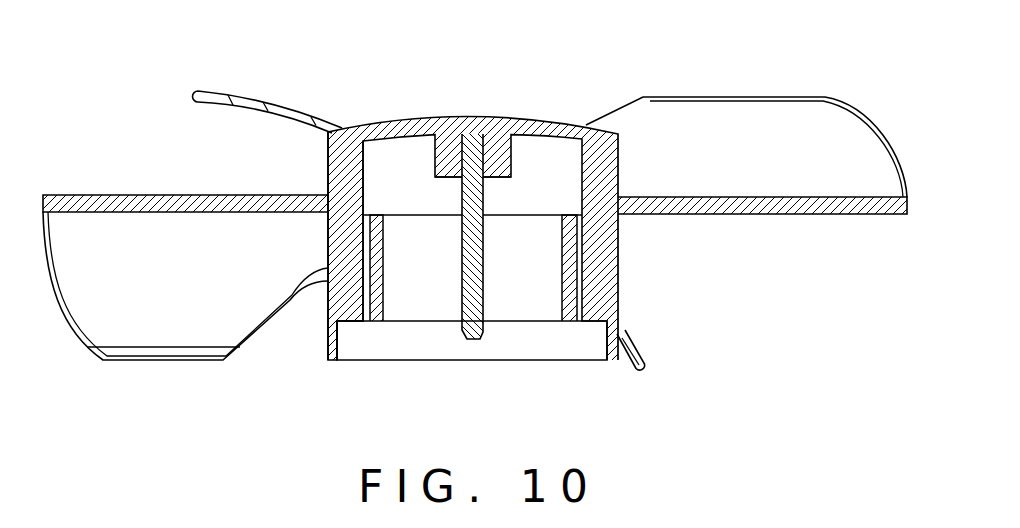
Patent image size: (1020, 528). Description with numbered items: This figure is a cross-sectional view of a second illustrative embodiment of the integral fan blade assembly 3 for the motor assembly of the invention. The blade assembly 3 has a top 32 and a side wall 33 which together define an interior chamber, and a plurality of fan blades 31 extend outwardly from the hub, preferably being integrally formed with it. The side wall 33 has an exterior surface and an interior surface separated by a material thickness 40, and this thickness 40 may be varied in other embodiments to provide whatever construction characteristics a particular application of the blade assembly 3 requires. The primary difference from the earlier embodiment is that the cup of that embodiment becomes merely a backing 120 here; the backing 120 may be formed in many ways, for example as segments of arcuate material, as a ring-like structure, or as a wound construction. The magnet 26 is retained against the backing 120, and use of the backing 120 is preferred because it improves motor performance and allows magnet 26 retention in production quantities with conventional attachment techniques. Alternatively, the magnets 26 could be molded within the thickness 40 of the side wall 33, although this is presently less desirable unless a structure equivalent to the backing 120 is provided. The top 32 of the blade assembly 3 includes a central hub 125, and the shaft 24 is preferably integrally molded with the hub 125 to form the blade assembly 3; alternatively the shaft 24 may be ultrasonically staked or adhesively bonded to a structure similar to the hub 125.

The fan blade assembly 3 is at (500, 57).
The shaft 24 is at (483, 307).
The magnet 26 is at (378, 323).
The fan blade 31 is at (243, 111).
The top 32 is at (402, 117).
The side wall 33 is at (328, 157).
The material thickness 40 is at (328, 308).
The backing 120 is at (576, 268).
The central hub 125 is at (505, 159).